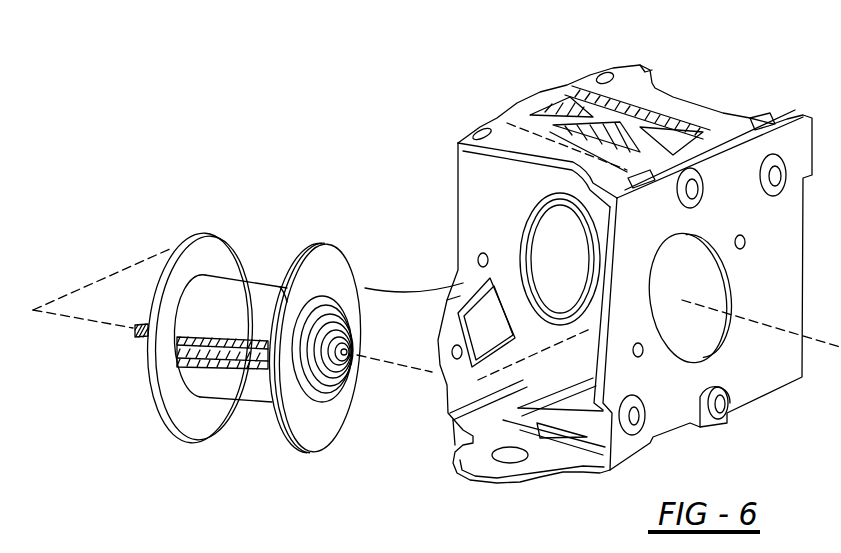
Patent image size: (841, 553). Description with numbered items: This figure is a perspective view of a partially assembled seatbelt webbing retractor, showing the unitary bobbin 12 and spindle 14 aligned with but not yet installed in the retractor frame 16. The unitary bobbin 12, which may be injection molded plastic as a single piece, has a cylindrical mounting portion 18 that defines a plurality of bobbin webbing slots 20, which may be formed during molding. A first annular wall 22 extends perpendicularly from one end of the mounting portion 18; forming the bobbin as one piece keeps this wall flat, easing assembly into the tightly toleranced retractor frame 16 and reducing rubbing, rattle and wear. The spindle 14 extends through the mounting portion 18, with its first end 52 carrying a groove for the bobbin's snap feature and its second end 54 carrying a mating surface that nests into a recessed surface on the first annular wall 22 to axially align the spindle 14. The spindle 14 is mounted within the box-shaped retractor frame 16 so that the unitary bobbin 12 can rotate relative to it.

The unitary bobbin 12 is at (247, 284).
The spindle 14 is at (347, 353).
The retractor frame 16 is at (797, 112).
The mounting portion 18 is at (268, 286).
The bobbin webbing slots 20 is at (203, 398).
The first annular wall 22 is at (327, 265).
The first end 52 is at (148, 351).
The second end 54 is at (320, 402).